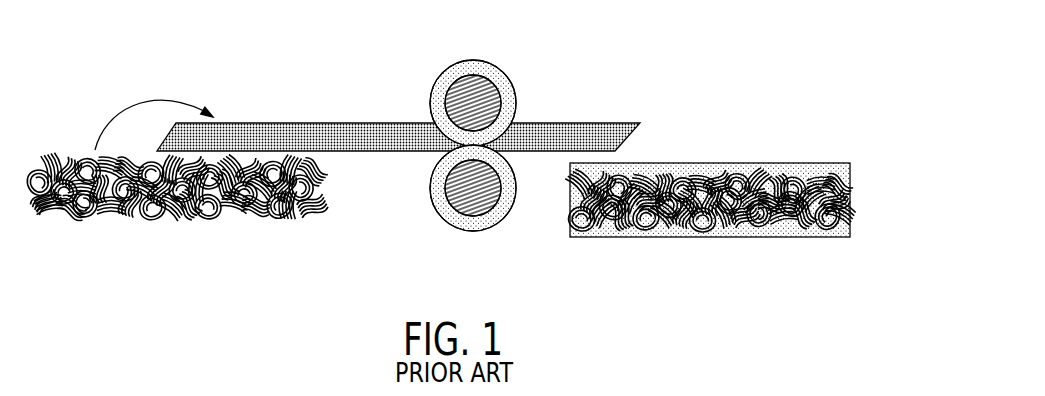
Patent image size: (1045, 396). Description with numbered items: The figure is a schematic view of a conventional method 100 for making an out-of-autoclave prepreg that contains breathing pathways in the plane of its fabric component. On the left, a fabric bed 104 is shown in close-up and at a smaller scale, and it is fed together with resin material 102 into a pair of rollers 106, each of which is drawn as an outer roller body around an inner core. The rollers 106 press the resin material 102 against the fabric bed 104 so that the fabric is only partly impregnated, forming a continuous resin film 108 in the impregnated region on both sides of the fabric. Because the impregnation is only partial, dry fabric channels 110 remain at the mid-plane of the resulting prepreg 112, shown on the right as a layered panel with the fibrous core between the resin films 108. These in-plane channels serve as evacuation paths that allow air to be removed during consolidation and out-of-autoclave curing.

The conventional method 100 is at (597, 86).
The resin material 102 is at (462, 115).
The fabric bed 104 is at (272, 122).
The rollers 106 is at (487, 100).
The continuous resin film 108 is at (780, 178).
The dry fabric channels 110 is at (862, 201).
The prepreg 112 is at (750, 174).